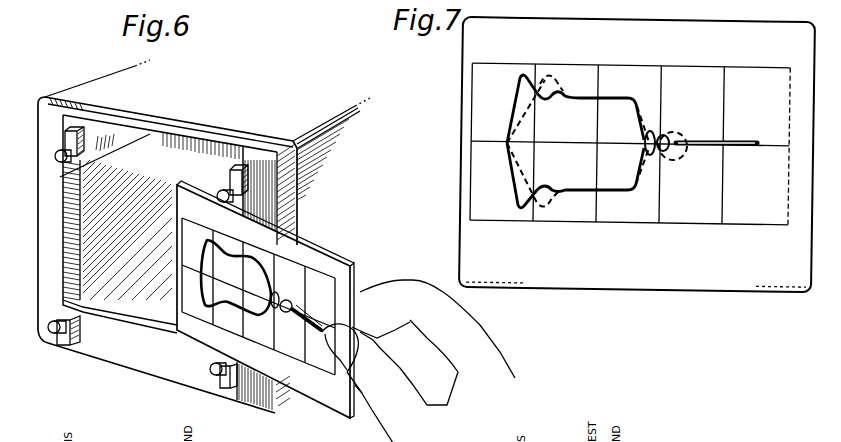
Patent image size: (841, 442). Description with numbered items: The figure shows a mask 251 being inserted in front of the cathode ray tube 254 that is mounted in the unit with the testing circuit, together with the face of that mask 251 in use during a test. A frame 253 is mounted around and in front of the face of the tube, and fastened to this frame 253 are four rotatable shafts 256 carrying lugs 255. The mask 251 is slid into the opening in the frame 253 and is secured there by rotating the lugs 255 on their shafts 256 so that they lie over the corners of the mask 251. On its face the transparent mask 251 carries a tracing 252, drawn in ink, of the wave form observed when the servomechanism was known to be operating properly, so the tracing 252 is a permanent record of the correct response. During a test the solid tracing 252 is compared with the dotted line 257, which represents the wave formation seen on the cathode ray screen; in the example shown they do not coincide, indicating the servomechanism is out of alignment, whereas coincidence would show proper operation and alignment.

In FIG. 6, the mask 251 is at (318, 246).
In FIG. 7, the mask 251 is at (462, 138).
In FIG. 6, the tracing 252 is at (270, 292).
In FIG. 7, the tracing 252 is at (583, 192).
In FIG. 6, the frame 253 is at (300, 171).
In FIG. 6, the cathode ray tube 254 is at (150, 134).
In FIG. 6, the lugs 255 is at (84, 129).
In FIG. 6, the rotatable shafts 256 is at (57, 152).
In FIG. 7, the dotted line 257 is at (548, 82).